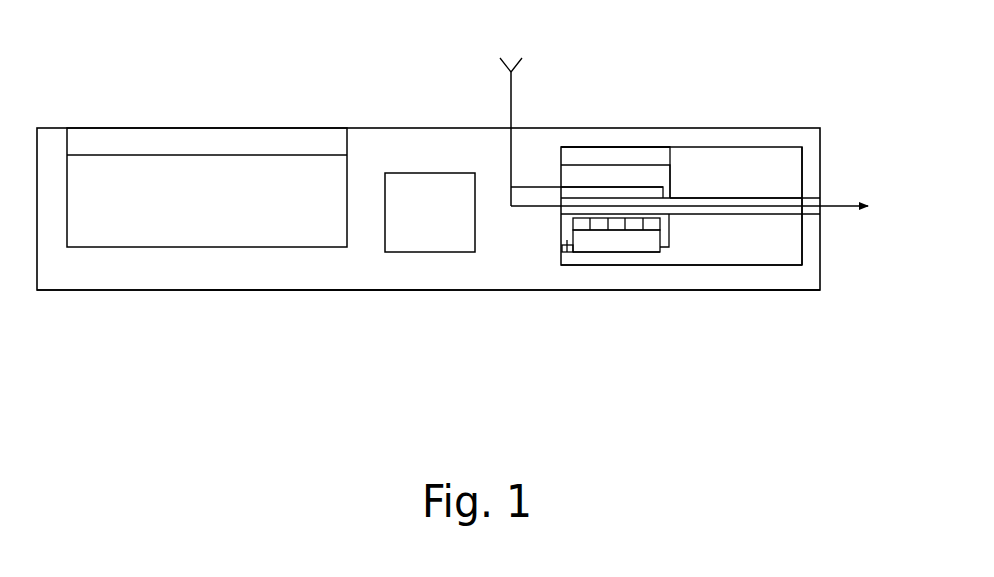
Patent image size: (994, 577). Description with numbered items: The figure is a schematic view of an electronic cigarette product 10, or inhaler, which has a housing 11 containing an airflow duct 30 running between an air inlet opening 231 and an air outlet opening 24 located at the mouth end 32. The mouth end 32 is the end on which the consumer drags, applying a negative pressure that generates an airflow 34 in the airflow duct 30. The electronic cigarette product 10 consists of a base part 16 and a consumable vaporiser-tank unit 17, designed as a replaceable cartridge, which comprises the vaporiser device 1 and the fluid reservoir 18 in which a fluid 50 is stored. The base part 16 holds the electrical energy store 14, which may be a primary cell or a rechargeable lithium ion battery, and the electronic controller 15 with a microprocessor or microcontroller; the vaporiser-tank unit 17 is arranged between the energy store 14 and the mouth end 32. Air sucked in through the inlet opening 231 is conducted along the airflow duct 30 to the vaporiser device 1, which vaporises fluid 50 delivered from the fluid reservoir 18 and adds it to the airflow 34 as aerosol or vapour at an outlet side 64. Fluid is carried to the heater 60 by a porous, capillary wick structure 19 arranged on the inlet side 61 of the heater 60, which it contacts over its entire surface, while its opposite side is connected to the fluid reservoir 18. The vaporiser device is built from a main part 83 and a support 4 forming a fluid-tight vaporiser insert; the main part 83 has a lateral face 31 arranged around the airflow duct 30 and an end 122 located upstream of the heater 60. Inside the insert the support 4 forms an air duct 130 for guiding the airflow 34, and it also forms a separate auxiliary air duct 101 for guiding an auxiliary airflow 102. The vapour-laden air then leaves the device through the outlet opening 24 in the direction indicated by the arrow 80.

The electronic cigarette product 10 is at (400, 360).
The housing 11 is at (183, 291).
The base part 16 is at (332, 294).
The electrical energy store 14 is at (207, 187).
The electronic controller 15 is at (430, 212).
The airflow 34 is at (511, 155).
The air inlet opening 231 is at (511, 127).
The mouth end 32 is at (820, 162).
The fluid 50 is at (765, 204).
The airflow duct 30 is at (803, 235).
The signal output 80 is at (709, 209).
The air outlet opening 24 is at (822, 213).
The vaporiser-tank unit 17 is at (707, 268).
The fluid reservoir 18 is at (750, 268).
The auxiliary air duct 101 is at (575, 180).
The auxiliary airflow 102 is at (603, 187).
The outlet side 64 is at (630, 215).
The lateral face 31 is at (663, 160).
The vaporiser device 1 is at (686, 191).
The main part 83 is at (717, 197).
The support 4 is at (613, 175).
The heater 60 is at (615, 231).
The inlet side 61 is at (630, 247).
The wick structure 19 is at (665, 240).
The air duct 130 is at (563, 213).
The end 122 is at (570, 208).